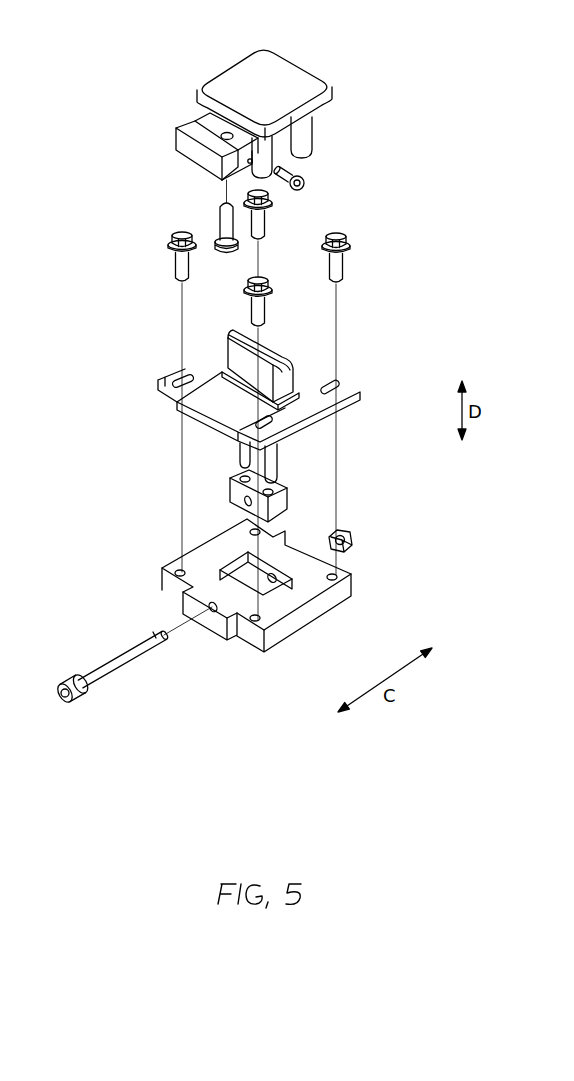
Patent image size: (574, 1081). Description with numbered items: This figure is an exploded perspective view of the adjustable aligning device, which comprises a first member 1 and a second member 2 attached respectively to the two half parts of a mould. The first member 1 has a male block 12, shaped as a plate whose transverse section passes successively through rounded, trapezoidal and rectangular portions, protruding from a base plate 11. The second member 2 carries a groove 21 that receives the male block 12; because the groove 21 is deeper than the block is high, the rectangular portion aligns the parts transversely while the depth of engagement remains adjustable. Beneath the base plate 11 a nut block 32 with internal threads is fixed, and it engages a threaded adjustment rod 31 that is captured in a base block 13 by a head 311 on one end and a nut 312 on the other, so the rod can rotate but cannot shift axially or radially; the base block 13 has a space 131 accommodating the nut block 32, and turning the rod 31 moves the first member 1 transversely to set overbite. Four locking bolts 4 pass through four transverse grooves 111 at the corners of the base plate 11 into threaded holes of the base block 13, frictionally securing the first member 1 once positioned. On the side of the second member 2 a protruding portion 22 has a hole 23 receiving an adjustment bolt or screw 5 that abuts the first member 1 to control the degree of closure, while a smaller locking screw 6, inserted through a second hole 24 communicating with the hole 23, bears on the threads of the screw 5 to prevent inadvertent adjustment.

The first member 1 is at (244, 384).
The base plate 11 is at (345, 400).
The grooves 111 is at (163, 380).
The male block 12 is at (242, 365).
The base block 13 is at (245, 588).
The space 131 is at (233, 572).
The second member 2 is at (190, 79).
The groove 21 is at (283, 135).
The protruding portion 22 is at (198, 163).
The hole 23 is at (248, 141).
The second hole 24 is at (249, 160).
The threaded adjustment rod 31 is at (119, 690).
The head 311 is at (77, 697).
The nut 312 is at (353, 542).
The nut block 32 is at (232, 492).
The locking bolts 4 is at (342, 258).
The adjustment bolt or screw 5 is at (222, 225).
The locking screw 6 is at (301, 188).